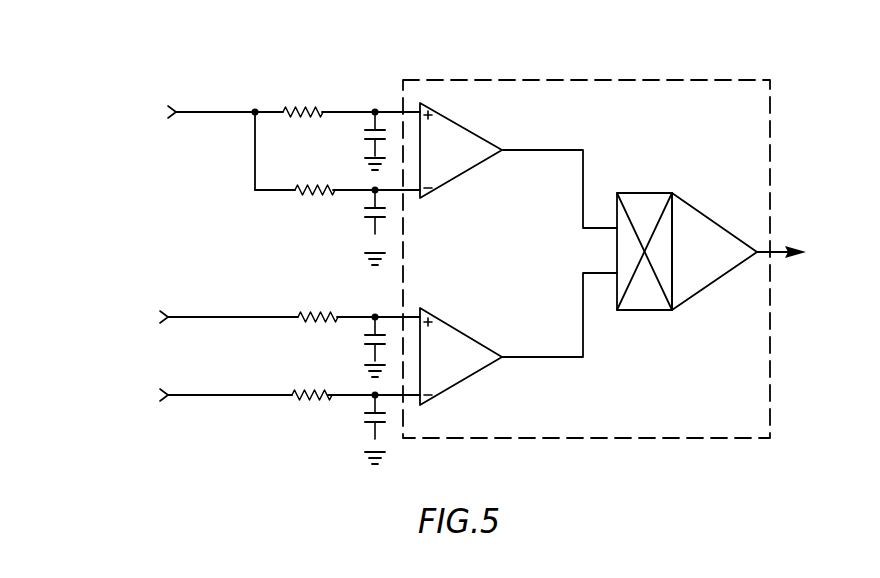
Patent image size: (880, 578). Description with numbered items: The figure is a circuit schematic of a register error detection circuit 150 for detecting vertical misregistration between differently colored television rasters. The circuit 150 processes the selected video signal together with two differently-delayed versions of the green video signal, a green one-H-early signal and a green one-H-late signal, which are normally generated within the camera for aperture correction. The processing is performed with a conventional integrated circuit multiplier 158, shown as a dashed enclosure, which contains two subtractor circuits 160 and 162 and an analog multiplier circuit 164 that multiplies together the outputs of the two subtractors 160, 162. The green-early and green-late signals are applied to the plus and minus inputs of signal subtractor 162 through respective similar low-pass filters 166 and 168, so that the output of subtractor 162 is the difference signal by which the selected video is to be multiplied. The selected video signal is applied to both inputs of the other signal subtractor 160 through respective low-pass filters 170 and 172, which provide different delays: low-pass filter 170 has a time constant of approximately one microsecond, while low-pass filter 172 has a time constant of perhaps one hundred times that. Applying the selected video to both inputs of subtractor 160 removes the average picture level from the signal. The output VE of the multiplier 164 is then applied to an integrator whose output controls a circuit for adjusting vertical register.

The register error detection circuit 150 is at (309, 498).
The integrated circuit multiplier 158 is at (587, 440).
The signal subtractor 160 is at (457, 167).
The signal subtractor 162 is at (460, 374).
The analog multiplier circuit 164 is at (642, 312).
The low-pass filter 166 is at (330, 348).
The low-pass filter 168 is at (322, 415).
The low-pass filter 170 is at (340, 131).
The low-pass filter 172 is at (328, 217).